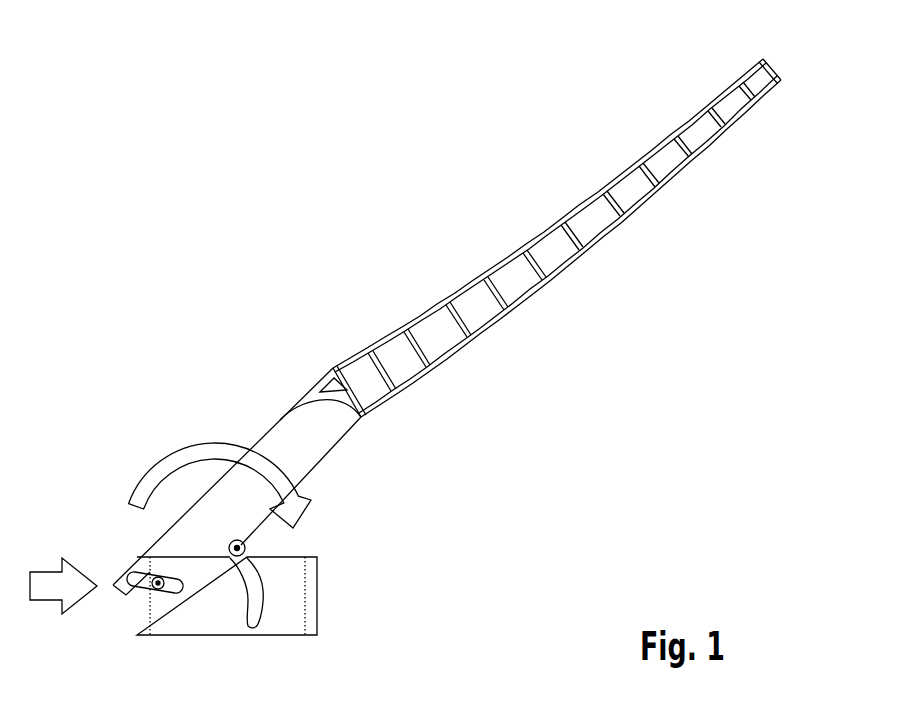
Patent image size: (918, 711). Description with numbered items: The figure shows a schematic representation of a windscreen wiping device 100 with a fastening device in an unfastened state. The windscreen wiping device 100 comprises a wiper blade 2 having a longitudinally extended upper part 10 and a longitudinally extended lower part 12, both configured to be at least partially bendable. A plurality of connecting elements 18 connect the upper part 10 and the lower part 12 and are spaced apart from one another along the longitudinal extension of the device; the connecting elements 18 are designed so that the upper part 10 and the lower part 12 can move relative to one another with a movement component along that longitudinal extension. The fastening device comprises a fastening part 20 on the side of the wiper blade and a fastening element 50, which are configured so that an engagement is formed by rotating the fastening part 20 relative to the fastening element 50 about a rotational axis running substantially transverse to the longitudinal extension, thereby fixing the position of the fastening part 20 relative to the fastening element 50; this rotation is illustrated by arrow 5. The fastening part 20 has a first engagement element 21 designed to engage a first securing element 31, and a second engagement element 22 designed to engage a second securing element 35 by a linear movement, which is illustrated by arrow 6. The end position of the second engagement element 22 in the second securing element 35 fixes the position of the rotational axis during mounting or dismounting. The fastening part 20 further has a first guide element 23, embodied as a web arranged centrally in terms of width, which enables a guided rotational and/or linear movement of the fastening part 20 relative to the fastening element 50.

The windscreen wiping device 100 is at (115, 145).
The wiper blade 2 is at (684, 236).
The upper part 10 is at (683, 127).
The lower part 12 is at (550, 290).
The connecting elements 18 is at (636, 182).
The arrow 5 is at (289, 493).
The first guide element 23 is at (243, 523).
The fastening part on the side of the wiper blade 20 is at (210, 518).
The first engagement element 21 is at (246, 548).
The first securing element 31 is at (257, 616).
The fastening element 50 is at (198, 615).
The second engagement element 22 is at (125, 583).
The second securing element 35 is at (158, 598).
The arrow 6 is at (43, 578).